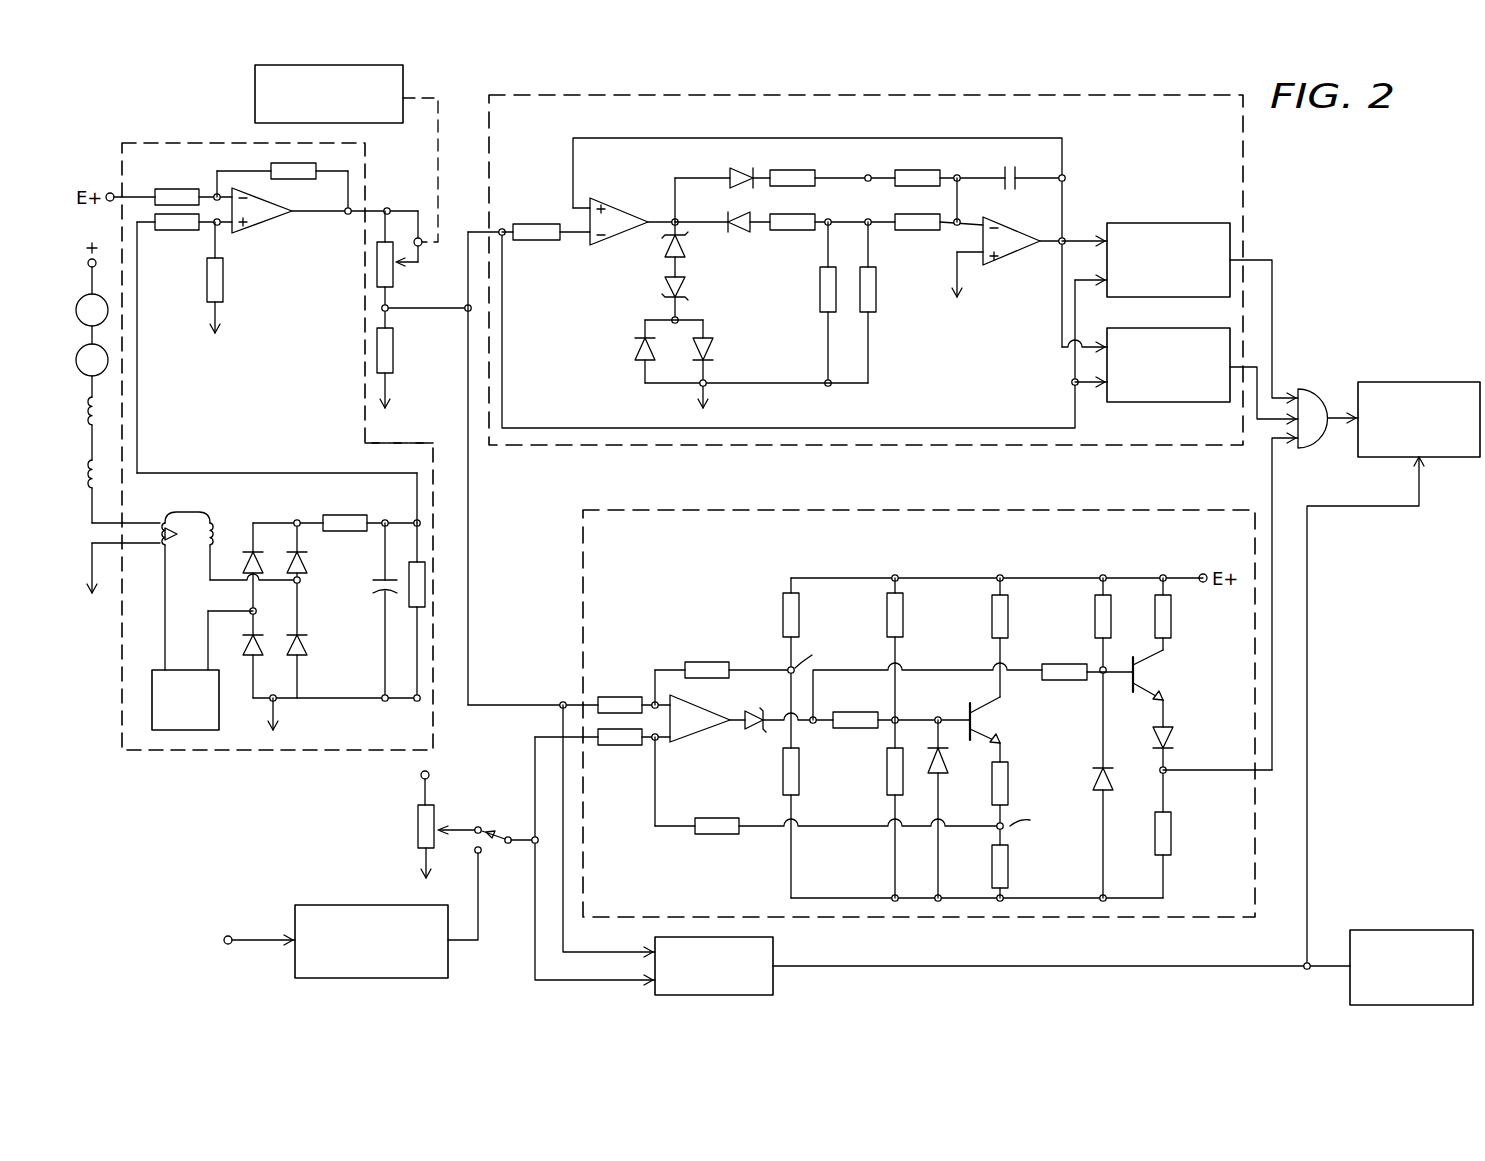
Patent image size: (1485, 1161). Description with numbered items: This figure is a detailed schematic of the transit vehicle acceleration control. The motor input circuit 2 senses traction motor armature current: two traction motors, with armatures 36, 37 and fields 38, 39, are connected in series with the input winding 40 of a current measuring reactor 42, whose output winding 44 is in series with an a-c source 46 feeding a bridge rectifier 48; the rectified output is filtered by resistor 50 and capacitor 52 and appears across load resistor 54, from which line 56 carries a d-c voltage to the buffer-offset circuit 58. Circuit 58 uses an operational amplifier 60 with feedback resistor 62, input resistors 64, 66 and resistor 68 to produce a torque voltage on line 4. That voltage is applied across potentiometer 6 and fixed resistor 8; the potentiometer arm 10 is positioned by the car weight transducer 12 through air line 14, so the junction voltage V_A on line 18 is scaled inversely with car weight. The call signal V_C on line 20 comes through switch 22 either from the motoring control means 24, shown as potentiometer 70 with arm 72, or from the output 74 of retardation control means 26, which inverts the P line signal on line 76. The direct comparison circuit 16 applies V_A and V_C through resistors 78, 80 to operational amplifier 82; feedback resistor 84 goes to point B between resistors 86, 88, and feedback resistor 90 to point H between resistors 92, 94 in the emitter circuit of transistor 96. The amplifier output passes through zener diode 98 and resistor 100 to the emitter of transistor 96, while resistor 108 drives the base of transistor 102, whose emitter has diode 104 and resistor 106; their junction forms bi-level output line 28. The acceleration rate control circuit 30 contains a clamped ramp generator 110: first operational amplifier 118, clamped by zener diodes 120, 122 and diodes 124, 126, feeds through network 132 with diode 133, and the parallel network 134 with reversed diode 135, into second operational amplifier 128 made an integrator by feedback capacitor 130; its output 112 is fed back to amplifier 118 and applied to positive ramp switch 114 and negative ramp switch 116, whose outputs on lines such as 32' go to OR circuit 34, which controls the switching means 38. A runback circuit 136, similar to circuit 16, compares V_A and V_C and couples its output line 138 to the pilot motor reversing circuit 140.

The motor input circuit 2 is at (375, 432).
The line 4 is at (387, 208).
The potentiometer 6 is at (398, 266).
The fixed resistor 8 is at (393, 350).
The potentiometer arm 10 is at (420, 262).
The car weight transducer 12 is at (255, 93).
The air line 14 is at (438, 157).
The direct comparison circuit 16 is at (1255, 905).
The line 18 is at (467, 322).
The line 20 is at (531, 950).
The switch 22 is at (510, 850).
The motoring control means 24 is at (400, 826).
The retardation control means 26 is at (366, 903).
The output line 28 is at (1210, 769).
The acceleration rate control circuit 30 is at (1243, 162).
The output line 32' is at (1264, 313).
The OR circuit 34 is at (1332, 398).
The armature 36 is at (108, 310).
The armature 37 is at (108, 360).
The field 38 is at (1407, 380).
The field 39 is at (100, 480).
The input winding 40 is at (148, 520).
The current measuring reactor 42 is at (200, 506).
The output winding 44 is at (158, 548).
The a-c source 46 is at (187, 668).
The bridge rectifier 48 is at (286, 609).
The resistor 50 is at (332, 513).
The capacitor 52 is at (383, 580).
The load resistor 54 is at (426, 585).
The line 56 is at (280, 470).
The buffer-offset circuit 58 is at (340, 283).
The operational amplifier 60 is at (262, 226).
The feedback resistor 62 is at (300, 180).
The input resistor 64 is at (176, 231).
The input resistor 66 is at (178, 189).
The resistor 68 is at (224, 287).
The potentiometer 70 is at (416, 810).
The potentiometer arm 72 is at (485, 820).
The output 74 is at (479, 905).
The line 76 is at (250, 935).
The resistor 78 is at (604, 694).
The resistor 80 is at (622, 746).
The operational amplifier 82 is at (693, 742).
The feedback resistor 84 is at (700, 660).
The resistor 86 is at (800, 622).
The resistor 88 is at (800, 785).
The feedback resistor 90 is at (719, 836).
The resistor 92 is at (1012, 779).
The resistor 94 is at (1012, 868).
The transistor 96 is at (1012, 712).
The zener diode 98 is at (758, 732).
The resistor 100 is at (855, 728).
The second transistor 102 is at (1150, 664).
The diode 104 is at (1172, 736).
The resistor 106 is at (1175, 828).
The resistor 108 is at (1060, 662).
The clamped ramp generator 110 is at (952, 360).
The output 112 is at (1064, 232).
The positive ramp switch 114 is at (1165, 222).
The negative ramp switch 116 is at (1142, 402).
The first operational amplifier 118 is at (600, 196).
The zener diode 120 is at (665, 250).
The zener diode 122 is at (662, 288).
The diode 124 is at (712, 346).
The diode 126 is at (635, 348).
The second operational amplifier 128 is at (1010, 260).
The feedback capacitor 130 is at (1003, 173).
The diode and resistance network 132 is at (778, 302).
The diode 133 is at (740, 233).
The second diode resistance network 134 is at (874, 162).
The series coupling diode 135 is at (735, 174).
The runback circuit 136 is at (776, 946).
The output line 138 is at (1060, 964).
The pilot motor reversing circuit 140 is at (1420, 928).